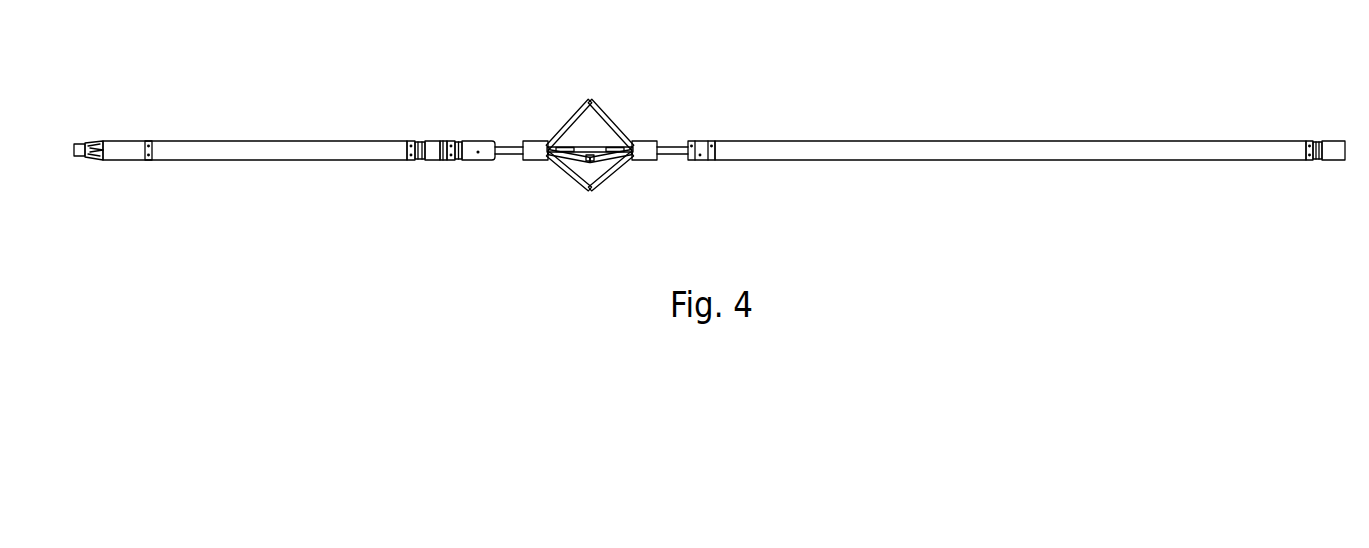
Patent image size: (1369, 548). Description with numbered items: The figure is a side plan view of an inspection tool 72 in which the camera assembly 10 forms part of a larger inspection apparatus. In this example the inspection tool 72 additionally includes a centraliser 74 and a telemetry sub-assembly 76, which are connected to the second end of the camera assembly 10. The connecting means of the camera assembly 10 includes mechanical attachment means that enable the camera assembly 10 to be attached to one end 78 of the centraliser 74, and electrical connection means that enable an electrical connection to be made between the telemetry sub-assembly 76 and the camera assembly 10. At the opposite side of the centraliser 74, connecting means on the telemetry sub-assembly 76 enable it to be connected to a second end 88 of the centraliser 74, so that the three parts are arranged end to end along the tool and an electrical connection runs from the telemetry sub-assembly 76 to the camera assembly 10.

The camera assembly 10 is at (257, 140).
The inspection tool 72 is at (831, 84).
The centraliser 74 is at (572, 188).
The telemetry sub-assembly 76 is at (1005, 162).
The one end of the centraliser 78 is at (523, 140).
The second end of the centraliser 88 is at (657, 140).